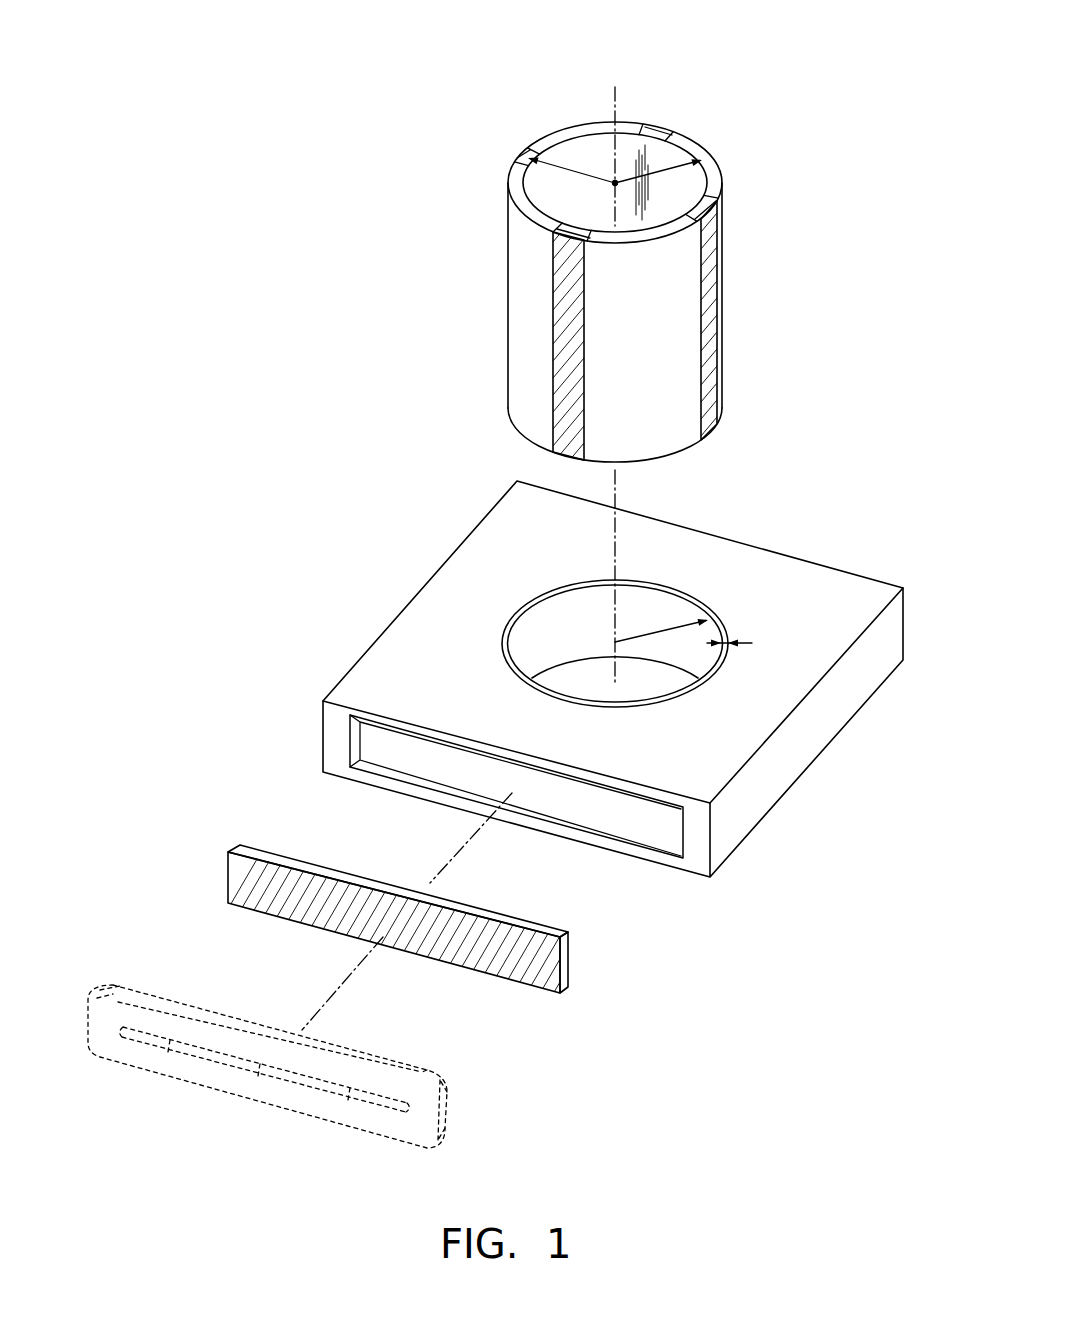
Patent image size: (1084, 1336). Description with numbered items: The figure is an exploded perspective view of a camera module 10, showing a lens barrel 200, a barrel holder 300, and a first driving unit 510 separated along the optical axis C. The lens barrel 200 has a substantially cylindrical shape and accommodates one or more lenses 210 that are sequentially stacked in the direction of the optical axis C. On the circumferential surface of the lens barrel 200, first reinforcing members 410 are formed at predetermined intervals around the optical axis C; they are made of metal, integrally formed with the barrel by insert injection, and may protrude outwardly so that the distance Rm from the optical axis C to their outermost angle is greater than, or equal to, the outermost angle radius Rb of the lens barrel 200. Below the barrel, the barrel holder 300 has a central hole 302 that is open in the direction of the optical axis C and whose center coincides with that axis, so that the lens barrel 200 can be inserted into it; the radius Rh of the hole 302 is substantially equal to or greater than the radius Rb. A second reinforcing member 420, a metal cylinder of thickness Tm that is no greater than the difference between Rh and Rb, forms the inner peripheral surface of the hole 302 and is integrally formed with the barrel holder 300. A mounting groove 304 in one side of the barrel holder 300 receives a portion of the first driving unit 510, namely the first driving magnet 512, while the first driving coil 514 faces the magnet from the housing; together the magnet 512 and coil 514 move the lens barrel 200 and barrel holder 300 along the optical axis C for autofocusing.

The camera module 10 is at (826, 98).
The lens barrel 200 is at (522, 348).
The lens 210 is at (580, 158).
The first reinforcing member 410 is at (710, 342).
The second reinforcing member 420 is at (519, 622).
The barrel holder 300 is at (846, 589).
The hole 302 is at (664, 674).
The mounting groove 304 is at (670, 835).
The first driving unit 510 is at (693, 1043).
The first driving magnet 512 is at (567, 968).
The first driving coil 514 is at (423, 1112).
The optical axis C is at (615, 371).
The distance from optical axis to outermost angle of first reinforcing member Rm is at (556, 166).
The outermost angle radius of lens barrel Rb is at (678, 160).
The radius of hole Rh is at (657, 625).
The thickness of second reinforcing member Tm is at (727, 638).